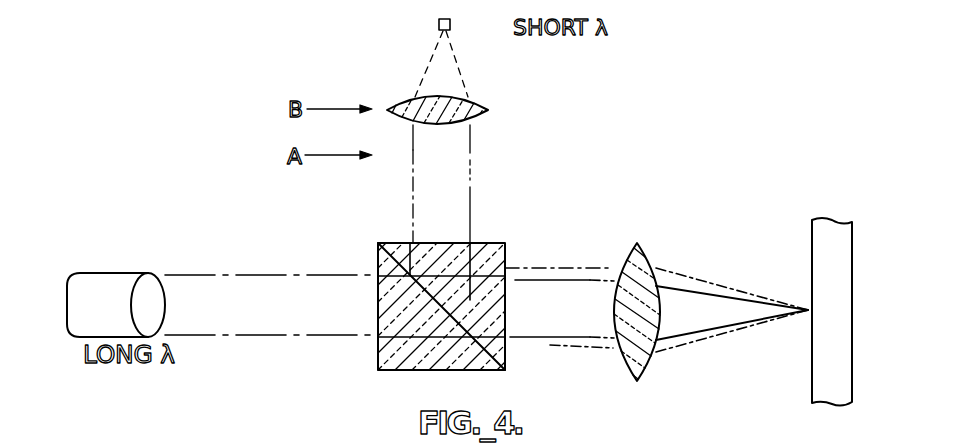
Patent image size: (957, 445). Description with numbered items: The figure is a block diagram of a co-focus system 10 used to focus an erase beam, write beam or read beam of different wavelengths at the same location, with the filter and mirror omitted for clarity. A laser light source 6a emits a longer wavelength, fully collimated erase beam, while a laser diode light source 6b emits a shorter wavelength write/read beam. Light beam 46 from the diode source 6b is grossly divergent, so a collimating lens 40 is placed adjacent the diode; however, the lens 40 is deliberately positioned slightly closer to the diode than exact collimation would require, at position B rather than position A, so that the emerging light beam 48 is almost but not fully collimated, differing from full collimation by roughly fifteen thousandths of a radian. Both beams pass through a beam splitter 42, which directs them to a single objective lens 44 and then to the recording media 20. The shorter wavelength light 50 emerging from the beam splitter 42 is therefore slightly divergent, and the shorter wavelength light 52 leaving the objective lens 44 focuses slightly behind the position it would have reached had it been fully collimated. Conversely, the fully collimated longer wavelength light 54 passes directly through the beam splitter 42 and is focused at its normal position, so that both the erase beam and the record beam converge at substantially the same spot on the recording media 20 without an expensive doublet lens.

The laser light source 6a is at (127, 273).
The laser diode light source 6b is at (451, 23).
The co-focus system 10 is at (733, 125).
The recording media 20 is at (852, 309).
The collimating lens 40 is at (486, 108).
The beam splitter 42 is at (490, 246).
The objective lens 44 is at (640, 250).
The light beam 46 is at (465, 83).
The light beam 48 is at (472, 193).
The 680 nm light 50 is at (563, 268).
The 680 nm light 52 is at (708, 283).
The 840 nm light 54 is at (317, 275).